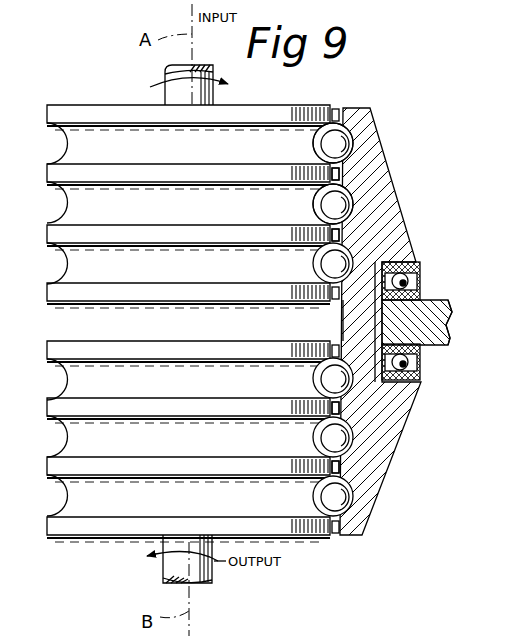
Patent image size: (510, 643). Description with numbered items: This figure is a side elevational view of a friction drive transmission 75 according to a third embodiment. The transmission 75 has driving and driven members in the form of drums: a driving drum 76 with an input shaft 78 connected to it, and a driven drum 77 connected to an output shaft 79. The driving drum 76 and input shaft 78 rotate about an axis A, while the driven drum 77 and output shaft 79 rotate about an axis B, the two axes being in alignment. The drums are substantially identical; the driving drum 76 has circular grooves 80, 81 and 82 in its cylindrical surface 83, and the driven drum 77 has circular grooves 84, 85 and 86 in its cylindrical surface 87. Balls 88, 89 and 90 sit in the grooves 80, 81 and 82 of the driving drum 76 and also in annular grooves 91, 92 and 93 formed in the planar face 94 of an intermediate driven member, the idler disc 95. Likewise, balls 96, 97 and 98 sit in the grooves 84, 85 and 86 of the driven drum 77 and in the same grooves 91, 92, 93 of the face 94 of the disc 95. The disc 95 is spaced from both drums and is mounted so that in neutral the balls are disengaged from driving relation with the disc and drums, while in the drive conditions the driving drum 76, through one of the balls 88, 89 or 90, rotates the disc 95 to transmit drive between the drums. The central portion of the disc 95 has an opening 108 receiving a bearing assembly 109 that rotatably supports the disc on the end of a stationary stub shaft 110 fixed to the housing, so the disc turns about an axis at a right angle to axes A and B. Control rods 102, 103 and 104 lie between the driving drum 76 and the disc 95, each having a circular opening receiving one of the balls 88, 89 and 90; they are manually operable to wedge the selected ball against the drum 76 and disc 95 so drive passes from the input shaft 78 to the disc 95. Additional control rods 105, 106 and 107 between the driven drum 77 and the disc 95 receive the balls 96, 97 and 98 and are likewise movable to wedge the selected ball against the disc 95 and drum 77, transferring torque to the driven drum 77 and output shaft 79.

The transmission 75 is at (301, 91).
The driving drum 76 is at (178, 182).
The driven drum 77 is at (178, 426).
The input shaft 78 is at (168, 85).
The output shaft 79 is at (212, 578).
The circular groove 80 is at (67, 264).
The circular groove 81 is at (66, 213).
The circular groove 82 is at (66, 141).
The cylindrical surface 83 is at (47, 170).
The circular groove 84 is at (67, 378).
The circular groove 85 is at (67, 440).
The circular groove 86 is at (67, 497).
The cylindrical surface 87 is at (47, 406).
The ball 88 is at (352, 258).
The ball 89 is at (352, 197).
The ball 90 is at (352, 134).
The annular groove 91 is at (380, 268).
The annular groove 92 is at (352, 212).
The annular groove 93 is at (352, 151).
The planar face 94 is at (338, 301).
The idler disc 95 is at (373, 118).
The ball 96 is at (352, 379).
The ball 97 is at (352, 441).
The ball 98 is at (352, 497).
The control rod 102 is at (344, 110).
The control rod 103 is at (345, 173).
The control rod 104 is at (345, 233).
The control rod 105 is at (342, 345).
The control rod 106 is at (345, 411).
The control rod 107 is at (345, 471).
The opening 108 is at (420, 318).
The bearing assembly 109 is at (423, 373).
The stub shaft 110 is at (447, 303).